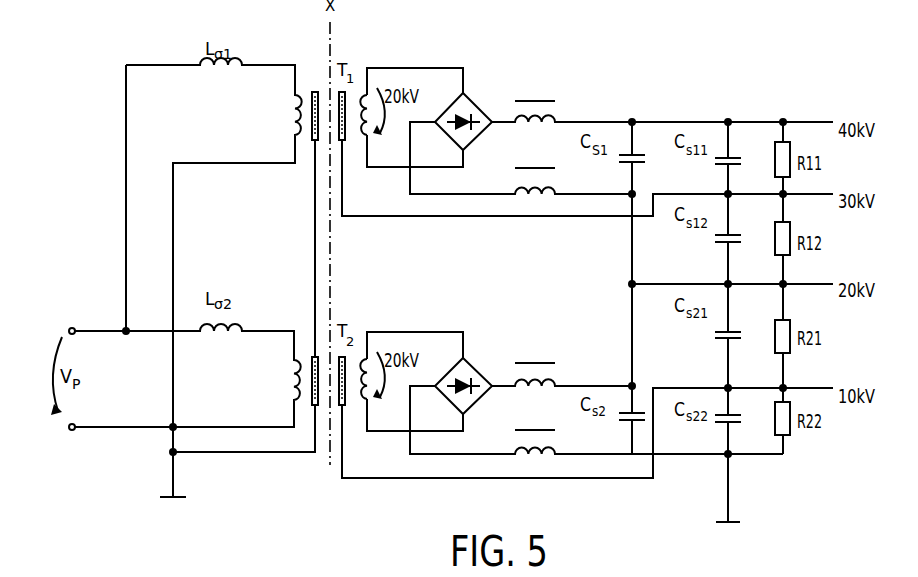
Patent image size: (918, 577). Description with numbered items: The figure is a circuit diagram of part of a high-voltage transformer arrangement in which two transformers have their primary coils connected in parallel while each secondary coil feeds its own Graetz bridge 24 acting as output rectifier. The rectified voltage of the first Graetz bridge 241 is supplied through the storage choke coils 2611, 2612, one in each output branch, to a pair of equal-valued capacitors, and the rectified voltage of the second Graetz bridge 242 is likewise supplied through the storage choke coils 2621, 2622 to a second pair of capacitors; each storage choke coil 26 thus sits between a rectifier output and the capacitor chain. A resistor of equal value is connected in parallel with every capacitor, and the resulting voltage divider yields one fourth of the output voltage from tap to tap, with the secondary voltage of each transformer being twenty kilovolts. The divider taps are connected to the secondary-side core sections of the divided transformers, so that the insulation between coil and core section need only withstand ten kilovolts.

The Graetz bridge 24 is at (472, 234).
The Graetz bridge of first transformer 241 is at (476, 109).
The Graetz bridge of second transformer 242 is at (476, 372).
The storage choke coil 26 is at (521, 251).
The first storage choke coil of first rectifier 2611 is at (533, 97).
The second storage choke coil of first rectifier 2612 is at (536, 168).
The first storage choke coil of second rectifier 2621 is at (533, 360).
The second storage choke coil of second rectifier 2622 is at (536, 430).